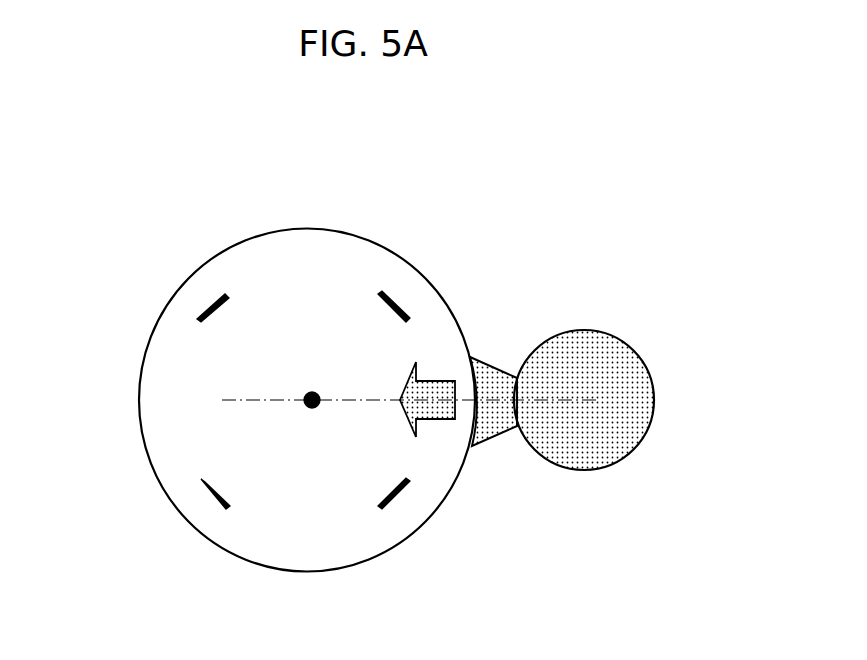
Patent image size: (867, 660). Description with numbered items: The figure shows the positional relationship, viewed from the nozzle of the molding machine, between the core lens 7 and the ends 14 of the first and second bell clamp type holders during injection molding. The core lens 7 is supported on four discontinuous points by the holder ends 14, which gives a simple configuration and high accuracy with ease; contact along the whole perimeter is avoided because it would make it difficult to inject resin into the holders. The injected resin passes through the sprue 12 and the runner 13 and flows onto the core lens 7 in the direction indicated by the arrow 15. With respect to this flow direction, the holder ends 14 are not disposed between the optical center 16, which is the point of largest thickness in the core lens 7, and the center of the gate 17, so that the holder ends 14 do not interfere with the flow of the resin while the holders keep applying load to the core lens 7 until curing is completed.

The core lens 7 is at (177, 436).
The sprue 12 is at (610, 358).
The runner 13 is at (497, 380).
The holder ends 14 is at (200, 318).
The arrow 15 is at (437, 382).
The optical center 16 is at (311, 392).
The gate 17 is at (493, 432).